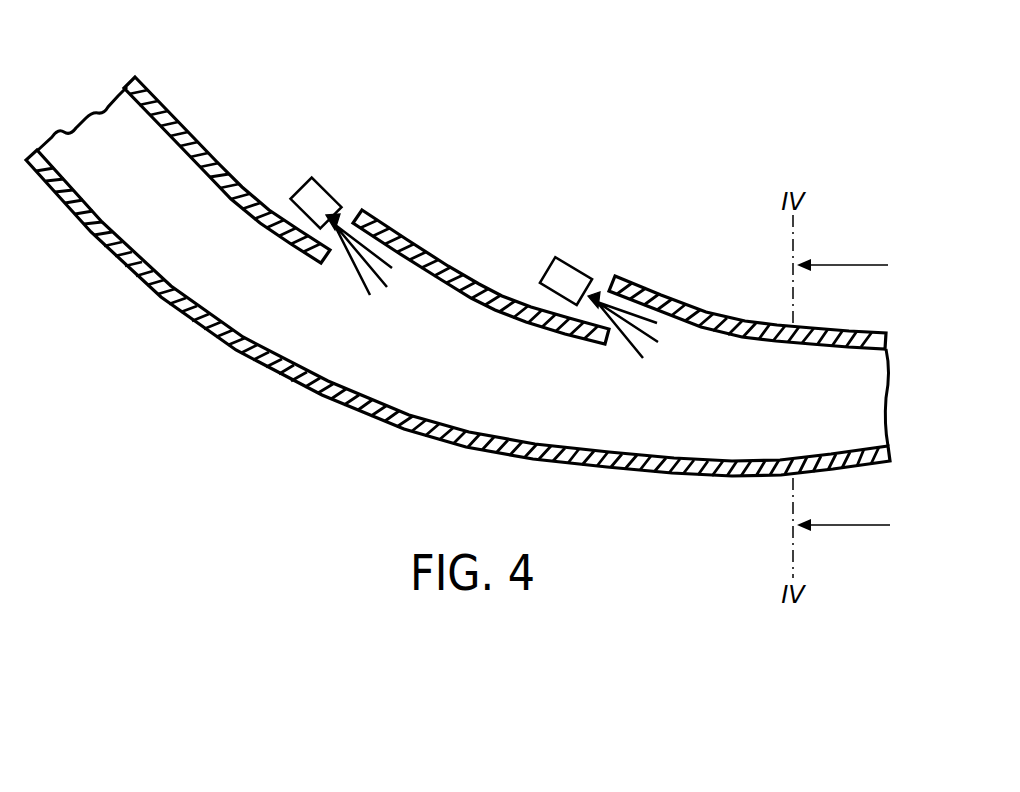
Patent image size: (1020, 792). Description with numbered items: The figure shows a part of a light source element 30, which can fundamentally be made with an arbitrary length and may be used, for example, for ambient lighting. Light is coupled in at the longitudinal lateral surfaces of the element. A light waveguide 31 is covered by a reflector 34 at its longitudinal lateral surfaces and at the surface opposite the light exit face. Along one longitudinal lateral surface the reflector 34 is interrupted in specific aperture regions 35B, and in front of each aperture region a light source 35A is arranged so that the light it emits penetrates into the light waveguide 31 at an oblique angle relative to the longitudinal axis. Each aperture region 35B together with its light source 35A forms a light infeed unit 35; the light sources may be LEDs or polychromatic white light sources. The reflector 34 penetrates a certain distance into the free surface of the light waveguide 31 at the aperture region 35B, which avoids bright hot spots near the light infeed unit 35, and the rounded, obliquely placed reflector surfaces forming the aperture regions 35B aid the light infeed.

The light source element 30 is at (189, 48).
The light waveguide 31 is at (157, 248).
The reflector 34 is at (200, 150).
The light infeed unit 35 is at (531, 131).
The light source 35A is at (297, 183).
The aperture region 35B is at (347, 222).